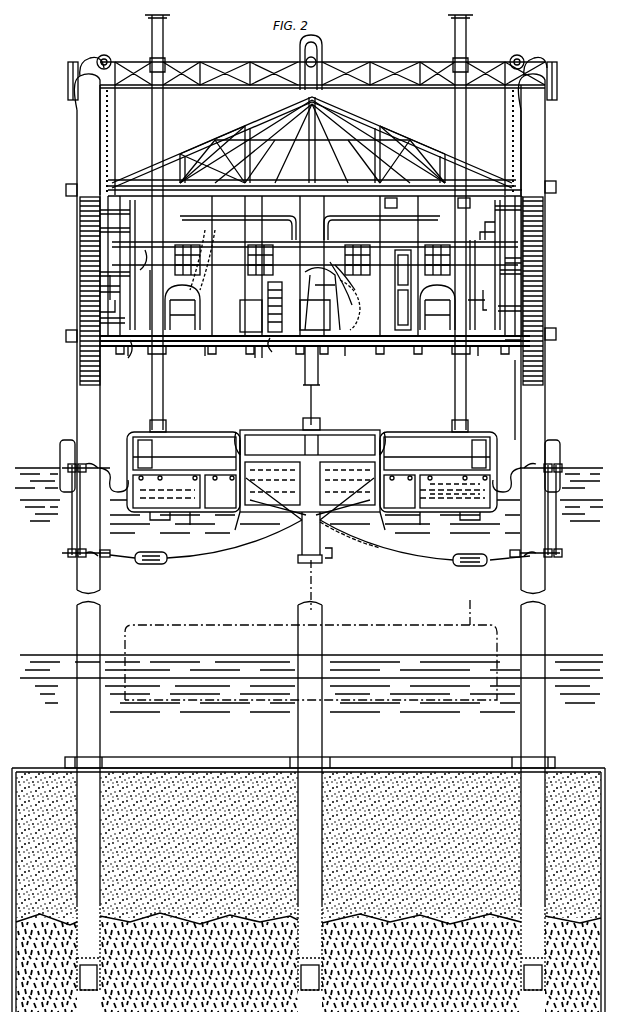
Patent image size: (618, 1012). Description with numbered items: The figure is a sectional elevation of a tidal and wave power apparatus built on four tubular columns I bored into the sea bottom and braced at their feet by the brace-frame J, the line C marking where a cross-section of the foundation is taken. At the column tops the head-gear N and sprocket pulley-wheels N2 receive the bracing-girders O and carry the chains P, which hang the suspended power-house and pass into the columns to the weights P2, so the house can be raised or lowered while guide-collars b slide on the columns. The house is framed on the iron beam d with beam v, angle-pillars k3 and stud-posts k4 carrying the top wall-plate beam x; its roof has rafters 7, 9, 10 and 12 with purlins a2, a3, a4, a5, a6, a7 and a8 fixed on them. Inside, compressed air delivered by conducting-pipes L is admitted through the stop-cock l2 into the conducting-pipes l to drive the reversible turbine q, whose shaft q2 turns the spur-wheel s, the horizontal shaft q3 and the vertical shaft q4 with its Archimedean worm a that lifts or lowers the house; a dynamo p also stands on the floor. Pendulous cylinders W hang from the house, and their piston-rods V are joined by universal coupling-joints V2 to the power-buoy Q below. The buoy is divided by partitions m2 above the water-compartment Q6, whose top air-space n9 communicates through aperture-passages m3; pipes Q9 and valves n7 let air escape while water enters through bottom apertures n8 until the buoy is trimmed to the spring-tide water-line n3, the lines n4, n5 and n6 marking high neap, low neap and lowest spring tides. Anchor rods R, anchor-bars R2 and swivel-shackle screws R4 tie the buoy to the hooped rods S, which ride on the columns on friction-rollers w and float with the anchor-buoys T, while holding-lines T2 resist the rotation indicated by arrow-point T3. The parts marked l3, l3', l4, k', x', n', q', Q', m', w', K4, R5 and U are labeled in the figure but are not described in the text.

The tubular columns I is at (77, 144).
The bracing-girders O is at (563, 62).
The pendulous cylinders W is at (152, 42).
The head-gear N is at (84, 56).
The sprocket pulley-wheel N2 is at (105, 55).
The purlin a5 is at (70, 62).
The chain P is at (116, 104).
The weights P2 is at (80, 260).
The piston-rods V is at (164, 110).
The guide-collars b is at (66, 190).
The purlin a4 is at (200, 158).
The purlin a2 is at (126, 180).
The purlin a3 is at (178, 165).
The purlin a6 is at (252, 136).
The purlin a7 is at (340, 125).
The purlin a8 is at (300, 118).
The rafter 7 is at (208, 150).
The rafter 10 is at (376, 130).
The rafter 9 is at (388, 150).
The rafter 12 is at (420, 160).
The stud-posts k4 is at (160, 212).
The conducting-pipes l is at (196, 242).
The pipe branch l3 is at (87, 212).
The pipe branch l3' is at (306, 218).
The stop-cock l2 is at (481, 223).
The pipe branch l4 is at (481, 229).
The pipe connection k' is at (334, 253).
The conducting-pipes L is at (312, 235).
The top wall-plate beam x is at (398, 261).
The panel x' is at (468, 200).
The arched openings n' is at (310, 307).
The angle-pillars k3 is at (240, 324).
The pipe q' is at (343, 283).
The reversible turbine q is at (413, 285).
The shaft q2 is at (80, 302).
The horizontal shaft q3 is at (560, 308).
The vertical shaft q4 is at (80, 316).
The Archimedean worm a is at (80, 274).
The beam v is at (145, 290).
The spur-wheel s is at (305, 348).
The brace-frame J is at (310, 554).
The iron beam d is at (211, 348).
The dynamo p is at (252, 350).
The power-buoy Q is at (319, 459).
The pontoon compartment Q' is at (312, 454).
The pipes Q9 is at (238, 432).
The partitions m2 is at (270, 435).
The tank compartments m' is at (259, 483).
The aperture-passages m3 is at (455, 483).
The valves n7 is at (244, 432).
The top air-space n9 is at (311, 468).
The bottom apertures n8 is at (315, 526).
The water-compartment Q6 is at (432, 542).
The universal coupling-joints V2 is at (166, 424).
The anchor-buoys T is at (60, 452).
The holding-lines T2 is at (310, 469).
The arrow-point T3 is at (515, 372).
The friction-rollers w is at (312, 500).
The coupling w' is at (335, 560).
The hooped rod S is at (92, 462).
The water-line n3 is at (310, 473).
The high neap tide line n4 is at (311, 511).
The anchor ropes or rods R is at (220, 558).
The anchor-bars R2 is at (350, 540).
The swivel-shackle and screws R4 is at (151, 549).
The turnbuckle K4 is at (476, 566).
The diagonal rods R5 is at (272, 510).
The dashed outline U is at (311, 650).
The low neap tide line n5 is at (311, 652).
The lowest spring tide line n6 is at (60, 679).
The section line C D C is at (20, 768).